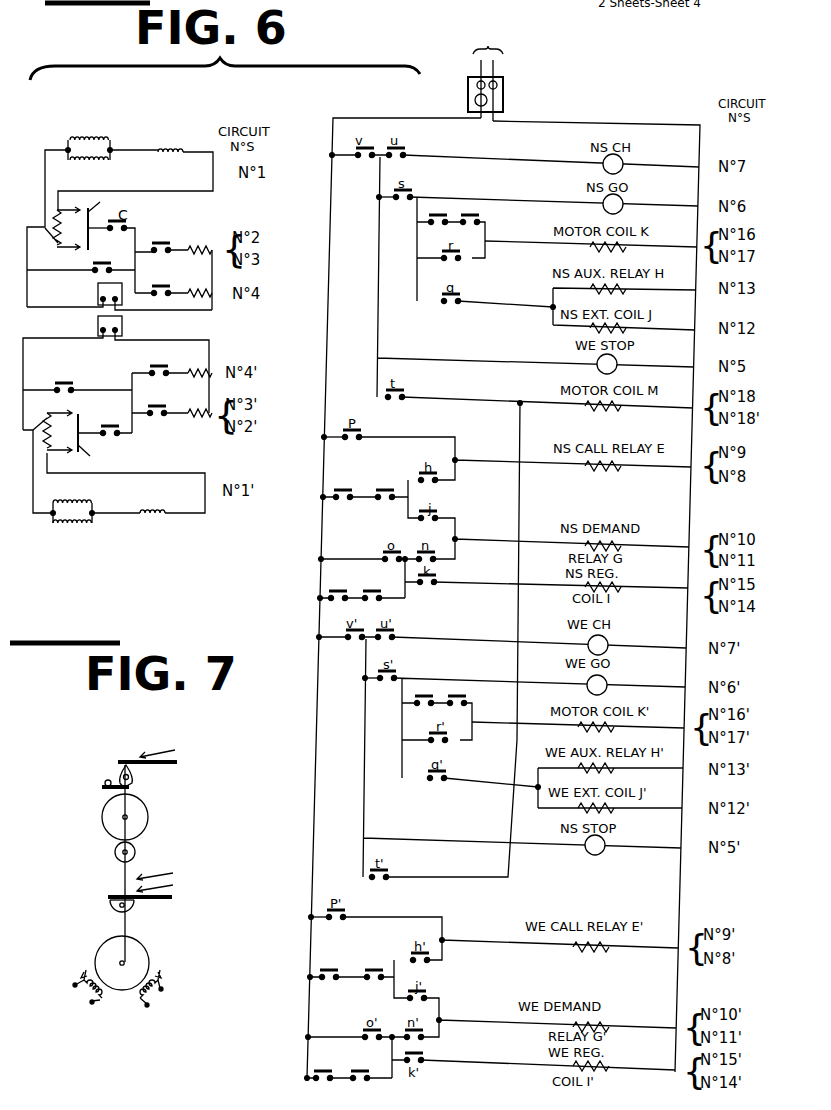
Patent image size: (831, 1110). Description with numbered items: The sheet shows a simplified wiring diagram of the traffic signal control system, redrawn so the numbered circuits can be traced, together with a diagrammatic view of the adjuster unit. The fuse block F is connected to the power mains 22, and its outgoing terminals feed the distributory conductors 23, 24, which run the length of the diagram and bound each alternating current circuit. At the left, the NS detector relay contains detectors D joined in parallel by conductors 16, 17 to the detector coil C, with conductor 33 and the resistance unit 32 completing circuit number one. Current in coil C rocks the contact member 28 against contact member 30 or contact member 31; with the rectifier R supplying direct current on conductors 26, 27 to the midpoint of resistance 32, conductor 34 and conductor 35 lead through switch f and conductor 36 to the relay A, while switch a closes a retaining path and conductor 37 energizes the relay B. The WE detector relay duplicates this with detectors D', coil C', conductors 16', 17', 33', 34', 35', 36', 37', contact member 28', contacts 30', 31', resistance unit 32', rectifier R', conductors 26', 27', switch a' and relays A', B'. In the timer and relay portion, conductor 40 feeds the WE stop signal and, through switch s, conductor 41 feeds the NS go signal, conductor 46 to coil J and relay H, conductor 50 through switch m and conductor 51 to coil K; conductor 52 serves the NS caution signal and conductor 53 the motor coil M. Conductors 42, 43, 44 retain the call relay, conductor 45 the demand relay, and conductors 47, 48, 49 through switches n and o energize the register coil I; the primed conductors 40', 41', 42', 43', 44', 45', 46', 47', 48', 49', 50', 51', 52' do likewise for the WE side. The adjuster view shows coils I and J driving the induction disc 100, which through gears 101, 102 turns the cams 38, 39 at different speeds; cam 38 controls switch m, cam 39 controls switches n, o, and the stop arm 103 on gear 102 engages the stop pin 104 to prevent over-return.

In FIG. 6, the conductor 16 is at (134, 141).
In FIG. 6, the conductor 17 is at (44, 228).
In FIG. 6, the power mains 22 is at (488, 77).
In FIG. 6, the distributory conductor 23 is at (386, 587).
In FIG. 6, the distributory conductor 24 is at (596, 588).
In FIG. 6, the conductor 26 is at (163, 302).
In FIG. 6, the conductor 27 is at (65, 298).
In FIG. 6, the contact member 28 is at (104, 221).
In FIG. 6, the contact member 30 is at (68, 202).
In FIG. 6, the contact member 31 is at (68, 253).
In FIG. 6, the resistance unit 32 is at (45, 239).
In FIG. 6, the conductor 33 is at (135, 181).
In FIG. 6, the conductor 34 is at (99, 220).
In FIG. 6, the conductor 35 is at (127, 260).
In FIG. 6, the conductor 36 is at (161, 240).
In FIG. 6, the conductor 37 is at (161, 283).
In FIG. 7, the cam 38 is at (133, 779).
In FIG. 7, the cam 39 is at (133, 913).
In FIG. 6, the conductor 40 is at (525, 277).
In FIG. 6, the conductor 41 is at (545, 240).
In FIG. 6, the conductor 42 is at (364, 488).
In FIG. 6, the conductor 43 is at (411, 499).
In FIG. 6, the conductor 44 is at (525, 458).
In FIG. 6, the conductor 45 is at (561, 538).
In FIG. 6, the conductor 46 is at (506, 296).
In FIG. 6, the conductor 47 is at (361, 589).
In FIG. 6, the conductor 48 is at (406, 577).
In FIG. 6, the conductor 49 is at (561, 576).
In FIG. 6, the conductor 50 is at (456, 229).
In FIG. 6, the conductor 51 is at (591, 236).
In FIG. 6, the conductor 52 is at (551, 152).
In FIG. 6, the conductor 53 is at (540, 628).
In FIG. 7, the induction disc 100 is at (145, 950).
In FIG. 7, the gear 101 is at (135, 850).
In FIG. 7, the gear 102 is at (148, 817).
In FIG. 7, the stop arm 103 is at (103, 790).
In FIG. 7, the stop pin 104 is at (105, 780).
In FIG. 6, the conductor 16' is at (116, 504).
In FIG. 6, the conductor 17' is at (29, 471).
In FIG. 6, the conductor 26' is at (162, 368).
In FIG. 6, the conductor 27' is at (63, 374).
In FIG. 6, the contact member 28' is at (96, 435).
In FIG. 6, the contact member 30' is at (59, 458).
In FIG. 6, the contact member 31' is at (59, 406).
In FIG. 6, the resistance unit 32' is at (47, 430).
In FIG. 6, the conductor 33' is at (126, 483).
In FIG. 6, the conductor 34' is at (105, 423).
In FIG. 6, the conductor 35' is at (129, 403).
In FIG. 6, the conductor 36' is at (161, 403).
In FIG. 6, the conductor 37' is at (161, 363).
In FIG. 6, the conductor 40' is at (511, 758).
In FIG. 6, the conductor 41' is at (533, 719).
In FIG. 6, the conductor 42' is at (351, 968).
In FIG. 6, the conductor 43' is at (398, 979).
In FIG. 6, the conductor 44' is at (510, 938).
In FIG. 6, the conductor 45' is at (549, 1017).
In FIG. 6, the conductor 46' is at (492, 774).
In FIG. 6, the conductor 47' is at (348, 1069).
In FIG. 6, the conductor 48' is at (392, 1056).
In FIG. 6, the conductor 49' is at (548, 1057).
In FIG. 6, the conductor 50' is at (443, 710).
In FIG. 6, the conductor 51' is at (578, 716).
In FIG. 6, the conductor 52' is at (539, 634).
In FIG. 6, the electromagnetic relay A is at (200, 268).
In FIG. 6, the electromagnetic relay B is at (200, 284).
In FIG. 6, the detector coil C is at (170, 139).
In FIG. 6, the detector D is at (89, 149).
In FIG. 6, the fuse block F is at (468, 78).
In FIG. 6, the rectifier R is at (110, 294).
In FIG. 6, the switch a is at (81, 261).
In FIG. 7, the register motor coil I is at (84, 991).
In FIG. 7, the extension motor coil J is at (151, 991).
In FIG. 7, the switch m is at (147, 749).
In FIG. 7, the switch n is at (155, 868).
In FIG. 7, the switch o is at (155, 881).
In FIG. 6, the rectifier R' is at (110, 326).
In FIG. 6, the switch a' is at (77, 380).
In FIG. 6, the electromagnetic relay A' is at (200, 404).
In FIG. 6, the electromagnetic relay B' is at (200, 364).
In FIG. 6, the detector coil C' is at (152, 500).
In FIG. 6, the detector D' is at (73, 513).